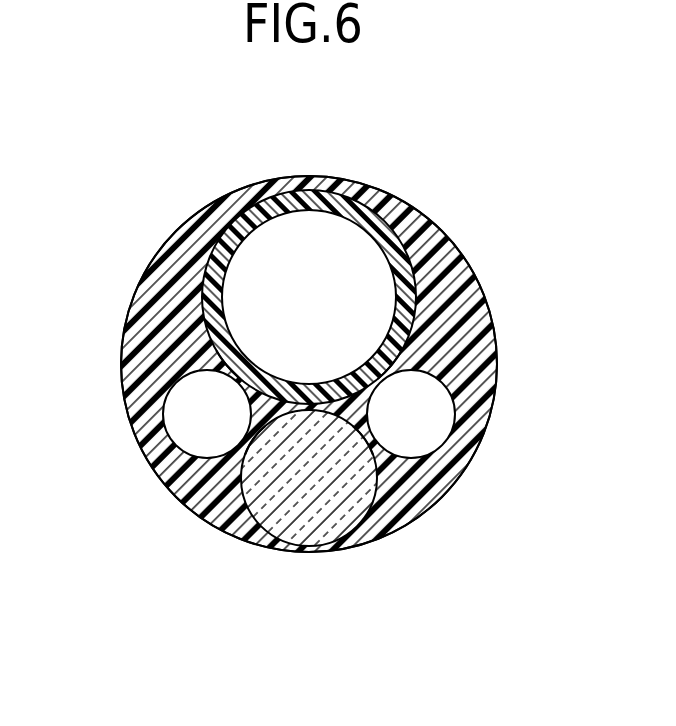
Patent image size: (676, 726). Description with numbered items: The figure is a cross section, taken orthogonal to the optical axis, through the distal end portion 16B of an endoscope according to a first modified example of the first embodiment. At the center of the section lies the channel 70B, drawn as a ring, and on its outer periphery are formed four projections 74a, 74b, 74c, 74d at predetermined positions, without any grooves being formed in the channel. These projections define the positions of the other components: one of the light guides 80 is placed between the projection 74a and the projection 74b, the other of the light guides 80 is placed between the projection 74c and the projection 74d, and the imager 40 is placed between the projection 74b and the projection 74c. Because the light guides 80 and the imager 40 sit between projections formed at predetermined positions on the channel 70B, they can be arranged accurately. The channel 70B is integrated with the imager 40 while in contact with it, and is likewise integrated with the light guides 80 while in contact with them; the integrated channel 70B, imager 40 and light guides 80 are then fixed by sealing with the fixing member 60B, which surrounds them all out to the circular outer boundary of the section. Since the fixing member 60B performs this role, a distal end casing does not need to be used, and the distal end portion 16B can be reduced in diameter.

The distal end portion 16B is at (335, 155).
The fixing member 60B is at (153, 303).
The channel 70B is at (403, 268).
The light guides 80 is at (187, 422).
The imager 40 is at (312, 503).
The projection 74a is at (197, 358).
The projection 74b is at (256, 412).
The projection 74c is at (357, 412).
The projection 74d is at (410, 355).